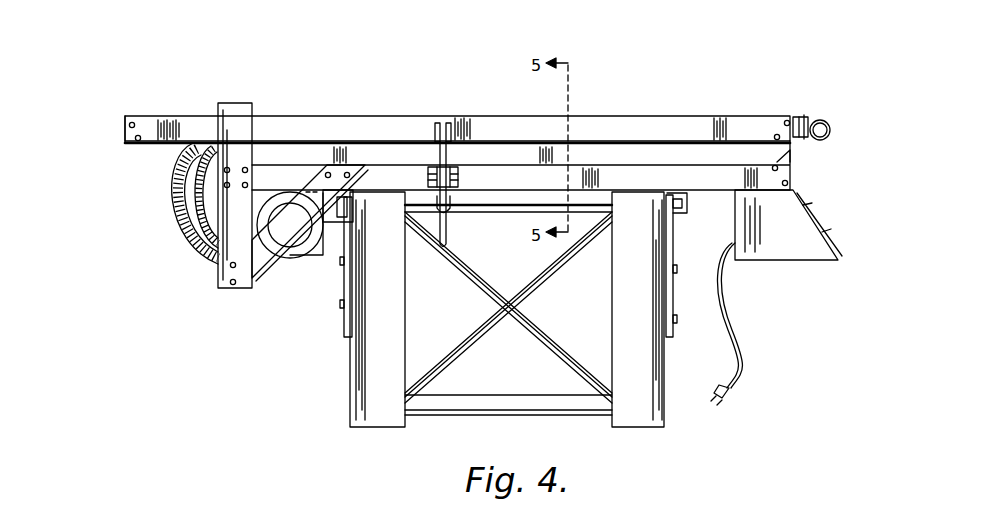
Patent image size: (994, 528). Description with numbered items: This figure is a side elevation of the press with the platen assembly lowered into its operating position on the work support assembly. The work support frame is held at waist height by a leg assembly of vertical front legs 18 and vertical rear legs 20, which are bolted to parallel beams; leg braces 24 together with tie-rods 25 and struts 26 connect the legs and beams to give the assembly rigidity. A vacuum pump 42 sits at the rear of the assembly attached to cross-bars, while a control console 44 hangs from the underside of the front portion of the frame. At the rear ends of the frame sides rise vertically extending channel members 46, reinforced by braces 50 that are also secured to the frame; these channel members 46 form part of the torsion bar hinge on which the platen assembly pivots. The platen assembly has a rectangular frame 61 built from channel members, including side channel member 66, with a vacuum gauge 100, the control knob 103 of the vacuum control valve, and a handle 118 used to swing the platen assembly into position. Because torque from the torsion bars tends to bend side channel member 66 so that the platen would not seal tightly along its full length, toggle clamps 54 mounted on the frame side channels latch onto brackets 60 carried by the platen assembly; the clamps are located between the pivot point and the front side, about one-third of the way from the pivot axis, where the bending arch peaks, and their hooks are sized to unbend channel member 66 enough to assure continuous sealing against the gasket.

The vertical front leg 18 is at (655, 376).
The vertical rear leg 20 is at (363, 380).
The leg brace 24 is at (551, 330).
The tie-rod 25 is at (498, 209).
The strut 26 is at (340, 270).
The vacuum pump 42 is at (281, 197).
The control console 44 is at (795, 232).
The vertically extending channel member 46 is at (233, 255).
The brace 50 is at (260, 263).
The toggle clamp 54 is at (433, 200).
The bracket 60 is at (438, 122).
The rectangular frame 61 is at (121, 128).
The channel member 66 is at (355, 130).
The vacuum gauge 100 is at (803, 115).
The control knob 103 is at (787, 120).
The handle 118 is at (831, 121).